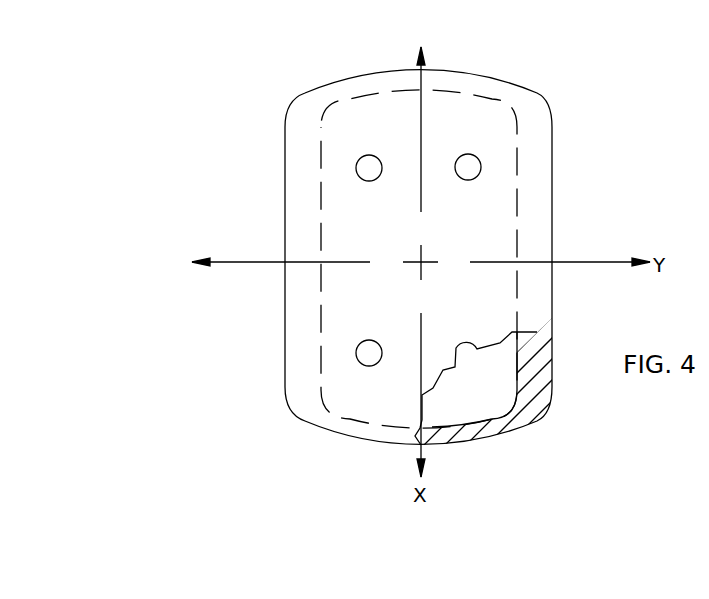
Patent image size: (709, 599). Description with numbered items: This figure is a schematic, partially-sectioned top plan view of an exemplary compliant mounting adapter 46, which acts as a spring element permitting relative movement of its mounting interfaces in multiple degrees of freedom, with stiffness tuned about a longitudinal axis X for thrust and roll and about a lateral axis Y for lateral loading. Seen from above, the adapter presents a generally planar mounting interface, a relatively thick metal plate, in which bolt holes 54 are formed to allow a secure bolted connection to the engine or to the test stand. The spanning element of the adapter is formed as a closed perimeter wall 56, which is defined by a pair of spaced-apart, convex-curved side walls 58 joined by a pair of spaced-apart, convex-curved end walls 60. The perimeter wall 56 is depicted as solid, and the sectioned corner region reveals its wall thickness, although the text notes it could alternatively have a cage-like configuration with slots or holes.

The compliant mounting adapter 46 is at (444, 298).
The bolt holes 54 is at (479, 160).
The closed perimeter wall 56 is at (553, 181).
The side walls 58 is at (298, 298).
The end walls 60 is at (471, 80).